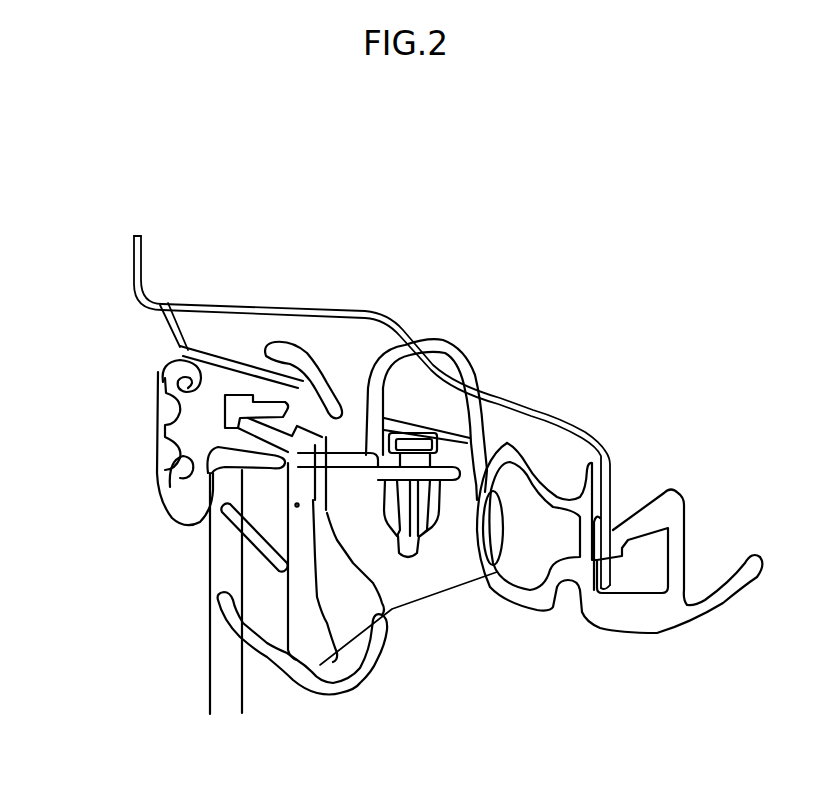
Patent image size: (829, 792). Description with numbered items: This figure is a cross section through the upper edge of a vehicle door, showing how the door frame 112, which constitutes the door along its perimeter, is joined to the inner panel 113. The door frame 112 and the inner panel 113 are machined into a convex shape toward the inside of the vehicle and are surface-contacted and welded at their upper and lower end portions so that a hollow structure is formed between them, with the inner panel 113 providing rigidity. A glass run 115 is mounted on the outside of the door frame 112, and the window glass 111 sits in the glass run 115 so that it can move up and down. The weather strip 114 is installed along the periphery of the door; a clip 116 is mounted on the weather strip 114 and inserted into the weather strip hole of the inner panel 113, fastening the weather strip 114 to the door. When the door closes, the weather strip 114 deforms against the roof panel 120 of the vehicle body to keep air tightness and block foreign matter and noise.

The window glass 111 is at (222, 675).
The door frame 112 is at (332, 531).
The inner panel 113 is at (433, 597).
The weather strip 114 is at (458, 350).
The glass run 115 is at (305, 602).
The clip 116 is at (433, 520).
The roof panel 120 is at (323, 307).